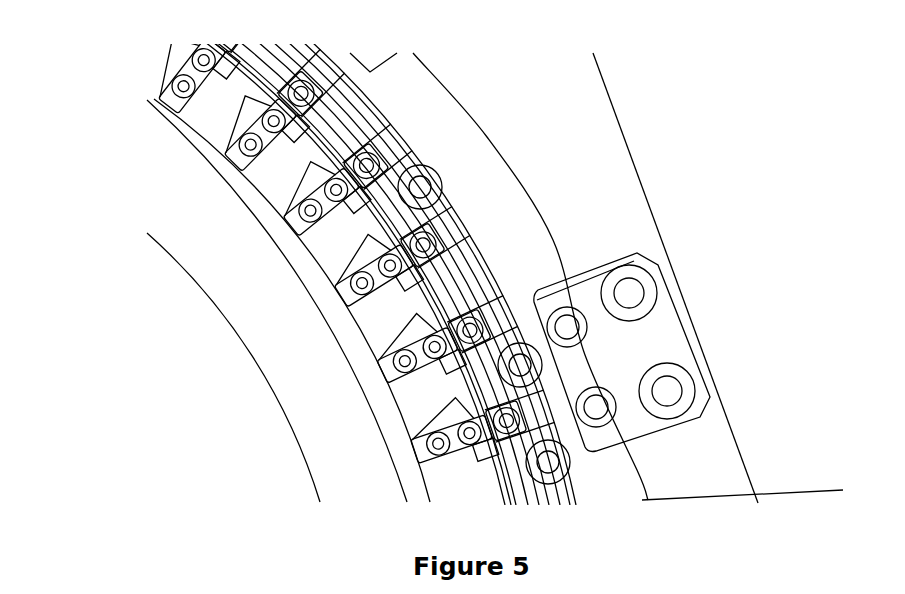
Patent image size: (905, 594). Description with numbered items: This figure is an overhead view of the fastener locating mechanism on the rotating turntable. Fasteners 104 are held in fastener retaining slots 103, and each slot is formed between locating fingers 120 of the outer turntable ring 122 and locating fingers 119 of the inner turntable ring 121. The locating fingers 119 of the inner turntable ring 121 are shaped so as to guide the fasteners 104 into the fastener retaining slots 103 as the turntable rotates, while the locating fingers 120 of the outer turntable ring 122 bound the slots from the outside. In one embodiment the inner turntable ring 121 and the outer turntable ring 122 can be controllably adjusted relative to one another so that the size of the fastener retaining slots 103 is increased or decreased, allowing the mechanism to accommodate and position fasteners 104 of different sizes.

The fastener retaining slot 103 is at (487, 272).
The fastener 104 is at (443, 177).
The locating finger of inner turntable ring 119 is at (315, 173).
The locating finger of outer turntable ring 120 is at (460, 267).
The inner turntable ring 121 is at (205, 128).
The outer turntable ring 122 is at (367, 108).